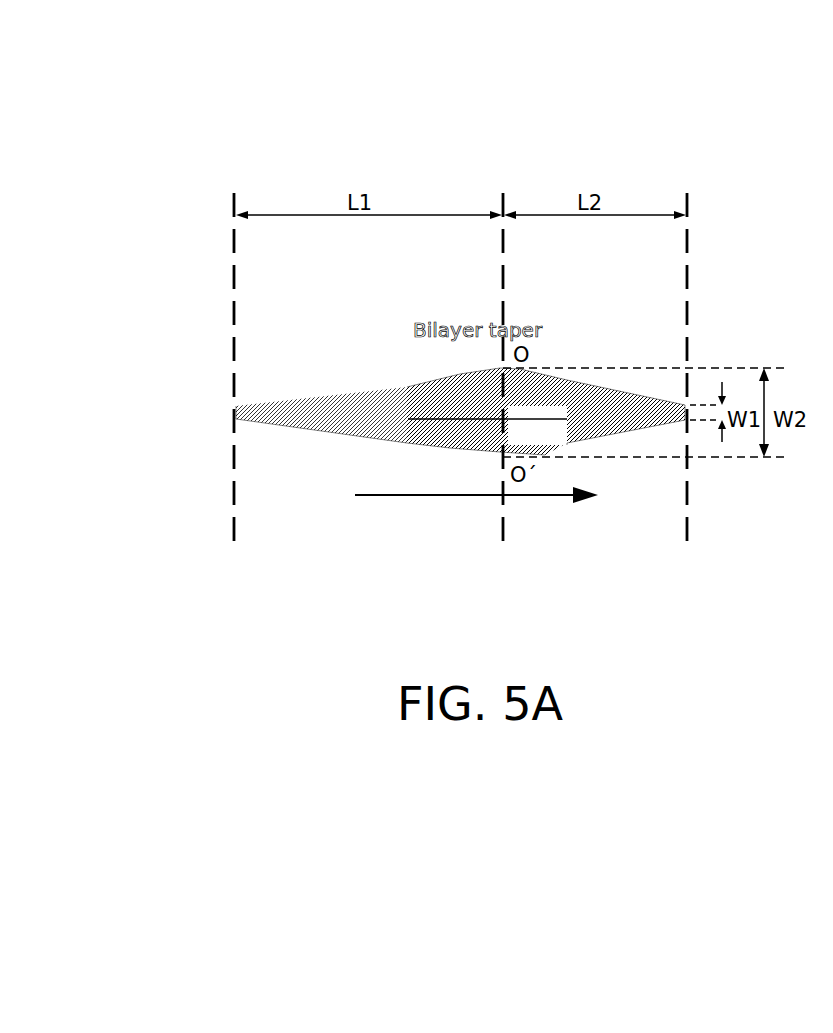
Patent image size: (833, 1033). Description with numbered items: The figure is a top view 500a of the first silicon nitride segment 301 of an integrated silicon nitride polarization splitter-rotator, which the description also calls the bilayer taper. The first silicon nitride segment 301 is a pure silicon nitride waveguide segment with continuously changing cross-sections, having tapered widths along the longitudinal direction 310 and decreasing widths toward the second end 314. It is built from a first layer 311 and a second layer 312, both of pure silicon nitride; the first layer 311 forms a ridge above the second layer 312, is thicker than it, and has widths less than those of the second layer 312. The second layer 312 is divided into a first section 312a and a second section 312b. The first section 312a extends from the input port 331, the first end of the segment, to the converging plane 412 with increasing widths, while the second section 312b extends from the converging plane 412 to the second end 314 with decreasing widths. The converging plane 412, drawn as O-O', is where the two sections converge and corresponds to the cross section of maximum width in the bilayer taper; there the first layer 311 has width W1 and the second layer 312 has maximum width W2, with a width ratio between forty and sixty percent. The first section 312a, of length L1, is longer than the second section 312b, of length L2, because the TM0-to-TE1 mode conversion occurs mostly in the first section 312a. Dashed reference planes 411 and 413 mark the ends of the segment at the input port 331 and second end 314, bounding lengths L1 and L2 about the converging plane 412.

The top view of first segment of integrated silicon nitride PSR 500a is at (180, 139).
The first silicon nitride segment 301 is at (423, 380).
The first layer 311 is at (407, 412).
The second layer 312 is at (533, 392).
The first section 312a is at (404, 438).
The second section 312b is at (567, 444).
The second end 314 is at (685, 410).
The input port 331 is at (236, 416).
The longitudinal direction 310 is at (476, 507).
The first reference plane 411 is at (233, 288).
The converging plane 412 is at (501, 307).
The third reference plane 413 is at (686, 290).